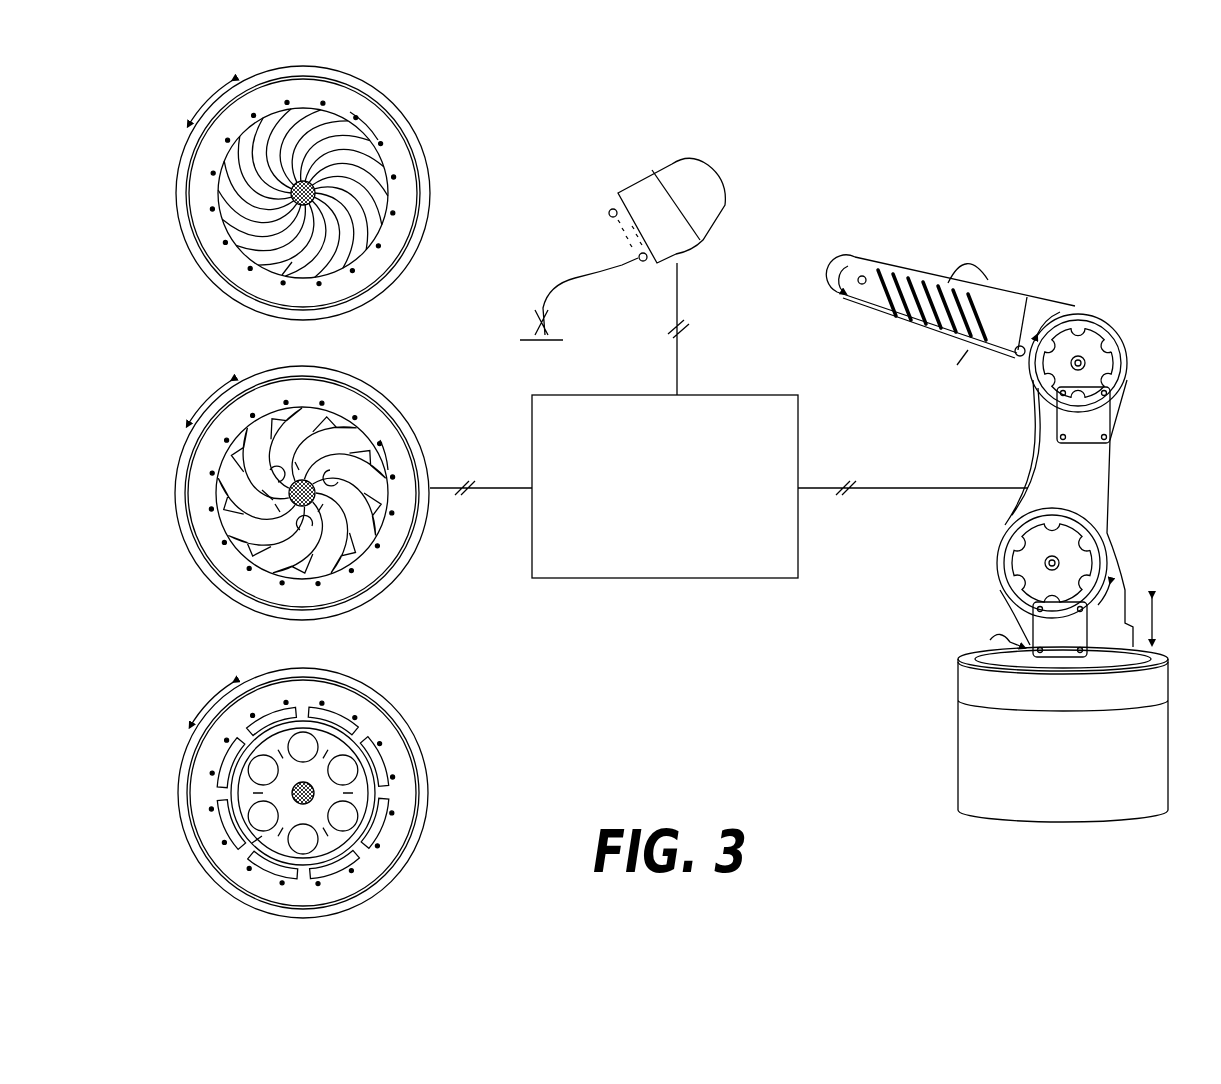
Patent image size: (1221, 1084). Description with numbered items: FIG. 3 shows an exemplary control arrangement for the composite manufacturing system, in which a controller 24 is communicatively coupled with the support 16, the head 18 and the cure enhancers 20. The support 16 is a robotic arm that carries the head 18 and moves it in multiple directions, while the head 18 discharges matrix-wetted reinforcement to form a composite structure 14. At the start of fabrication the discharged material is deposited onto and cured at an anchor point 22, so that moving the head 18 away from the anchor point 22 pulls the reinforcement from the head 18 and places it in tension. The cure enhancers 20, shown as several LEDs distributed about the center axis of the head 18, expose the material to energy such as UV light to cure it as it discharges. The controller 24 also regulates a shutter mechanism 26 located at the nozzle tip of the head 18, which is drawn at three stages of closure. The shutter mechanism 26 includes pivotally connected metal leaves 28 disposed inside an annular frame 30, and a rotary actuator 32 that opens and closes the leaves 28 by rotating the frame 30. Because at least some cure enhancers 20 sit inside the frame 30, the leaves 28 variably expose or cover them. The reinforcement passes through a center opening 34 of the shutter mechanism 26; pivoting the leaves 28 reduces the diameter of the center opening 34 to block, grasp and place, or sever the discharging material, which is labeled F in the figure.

The composite structure 14 is at (552, 330).
The support 16 is at (1097, 485).
The head 18 is at (440, 96).
The cure enhancer 20 is at (370, 517).
The anchor point 22 is at (558, 342).
The controller 24 is at (657, 521).
The shutter mechanism 26 is at (368, 122).
The leaves 28 is at (355, 250).
The annular frame 30 is at (412, 212).
The actuator 32 is at (400, 268).
The center opening 34 is at (282, 275).
The fluid F is at (330, 172).